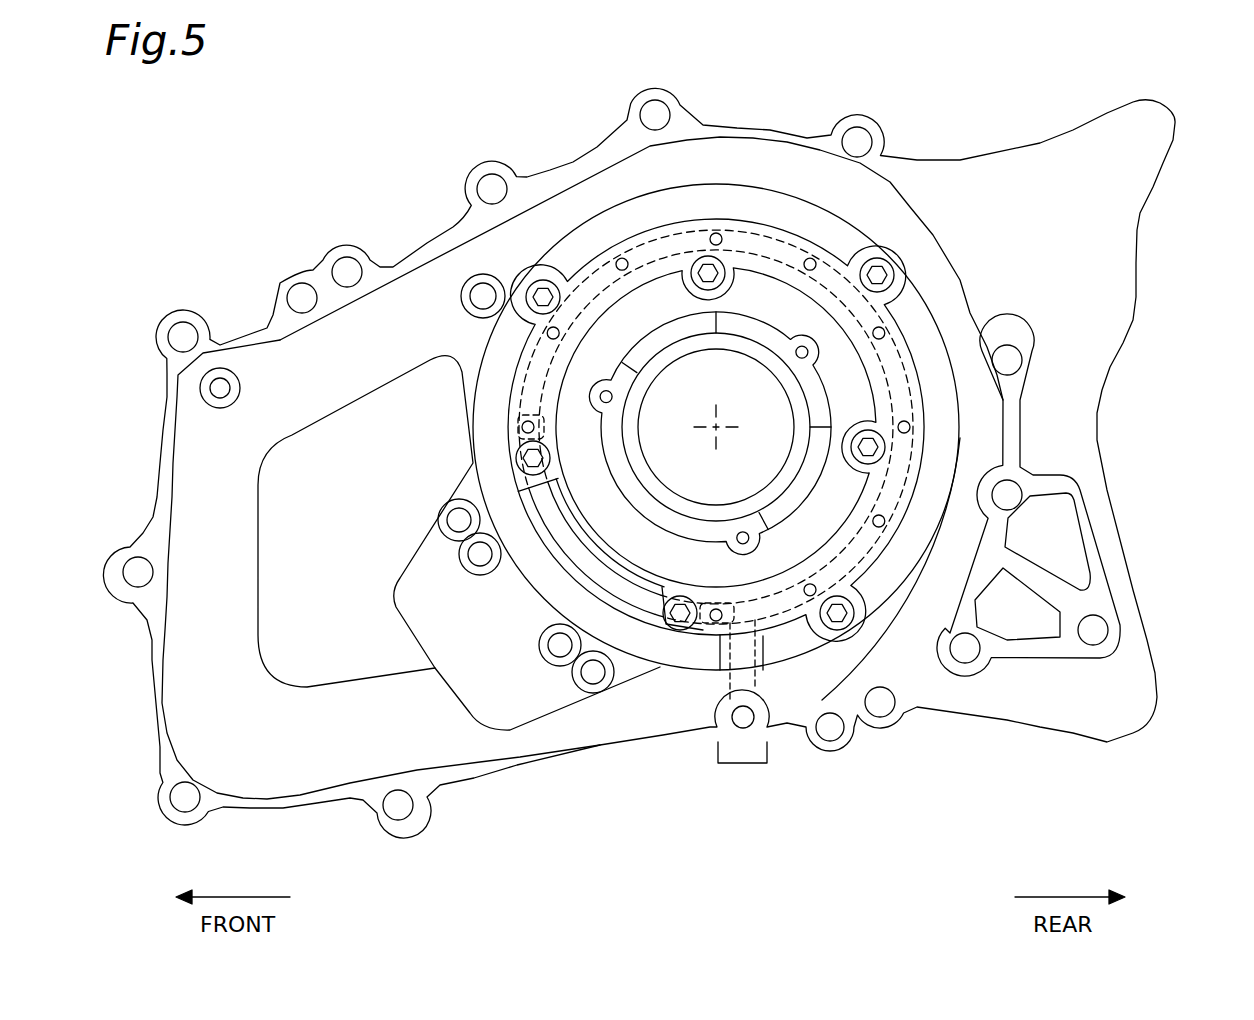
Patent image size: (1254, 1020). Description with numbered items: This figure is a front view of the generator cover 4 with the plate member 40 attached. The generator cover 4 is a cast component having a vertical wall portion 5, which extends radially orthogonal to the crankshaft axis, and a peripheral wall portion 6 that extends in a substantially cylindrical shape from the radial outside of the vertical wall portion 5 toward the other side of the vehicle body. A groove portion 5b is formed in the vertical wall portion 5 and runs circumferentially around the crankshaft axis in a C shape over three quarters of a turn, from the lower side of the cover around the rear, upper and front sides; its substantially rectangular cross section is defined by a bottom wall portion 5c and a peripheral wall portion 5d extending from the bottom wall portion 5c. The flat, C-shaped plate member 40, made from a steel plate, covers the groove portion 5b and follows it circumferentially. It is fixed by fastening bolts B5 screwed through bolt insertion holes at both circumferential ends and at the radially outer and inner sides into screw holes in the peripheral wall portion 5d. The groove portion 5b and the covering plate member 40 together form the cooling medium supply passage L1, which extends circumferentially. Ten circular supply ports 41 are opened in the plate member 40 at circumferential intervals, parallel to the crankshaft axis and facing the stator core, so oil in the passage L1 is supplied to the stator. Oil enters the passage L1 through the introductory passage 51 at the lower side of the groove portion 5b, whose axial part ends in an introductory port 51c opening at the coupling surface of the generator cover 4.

The generator cover 4 is at (411, 252).
The peripheral wall portion 6 is at (573, 163).
The plate member 40 is at (745, 222).
The supply port 41 is at (880, 336).
The cooling medium supply passage L1 is at (893, 360).
The vertical wall portion 5 is at (830, 680).
The groove portion 5b is at (910, 453).
The bottom wall portion 5c is at (897, 477).
The peripheral wall portion 5d is at (917, 487).
The introductory passage 51 is at (757, 685).
The introductory port 51c is at (743, 727).
The fastening bolt B5 is at (700, 257).